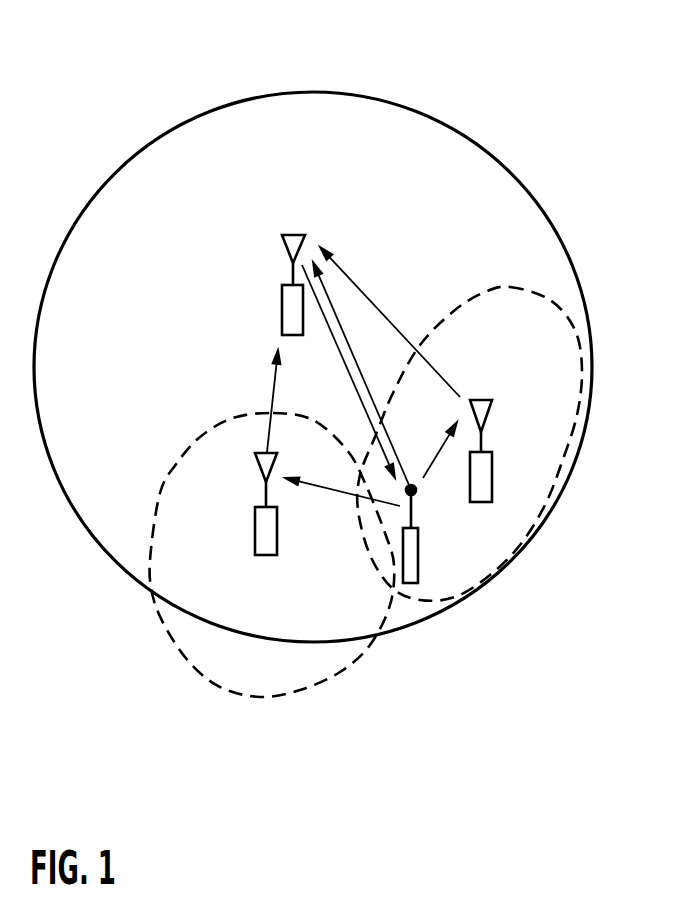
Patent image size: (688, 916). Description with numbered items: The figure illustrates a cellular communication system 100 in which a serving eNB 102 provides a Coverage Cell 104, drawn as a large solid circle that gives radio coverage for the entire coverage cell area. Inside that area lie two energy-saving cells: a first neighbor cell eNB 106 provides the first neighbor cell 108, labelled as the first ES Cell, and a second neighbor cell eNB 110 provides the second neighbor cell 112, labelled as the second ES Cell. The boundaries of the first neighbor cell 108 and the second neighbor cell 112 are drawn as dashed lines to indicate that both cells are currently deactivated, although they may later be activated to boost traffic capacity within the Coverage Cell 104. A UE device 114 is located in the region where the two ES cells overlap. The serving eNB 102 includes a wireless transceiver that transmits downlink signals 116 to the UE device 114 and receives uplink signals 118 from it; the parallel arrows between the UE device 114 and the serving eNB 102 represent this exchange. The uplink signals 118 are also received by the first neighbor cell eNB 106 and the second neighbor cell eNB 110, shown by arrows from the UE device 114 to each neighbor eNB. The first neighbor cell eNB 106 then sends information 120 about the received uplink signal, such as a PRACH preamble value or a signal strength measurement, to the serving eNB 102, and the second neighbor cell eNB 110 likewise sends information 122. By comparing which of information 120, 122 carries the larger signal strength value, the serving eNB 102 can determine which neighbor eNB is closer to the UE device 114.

The cellular communication system 100 is at (157, 724).
The serving eNB 102 is at (275, 312).
The Coverage Cell 104 is at (187, 119).
The first neighbor cell eNB 106 is at (495, 478).
The first neighbor cell 108 is at (552, 290).
The second neighbor cell eNB 110 is at (250, 532).
The second neighbor cell 112 is at (145, 518).
The UE device 114 is at (425, 557).
The downlink signals 116 is at (347, 394).
The uplink signals 118 is at (347, 330).
The information 120 is at (402, 328).
The information 122 is at (265, 395).